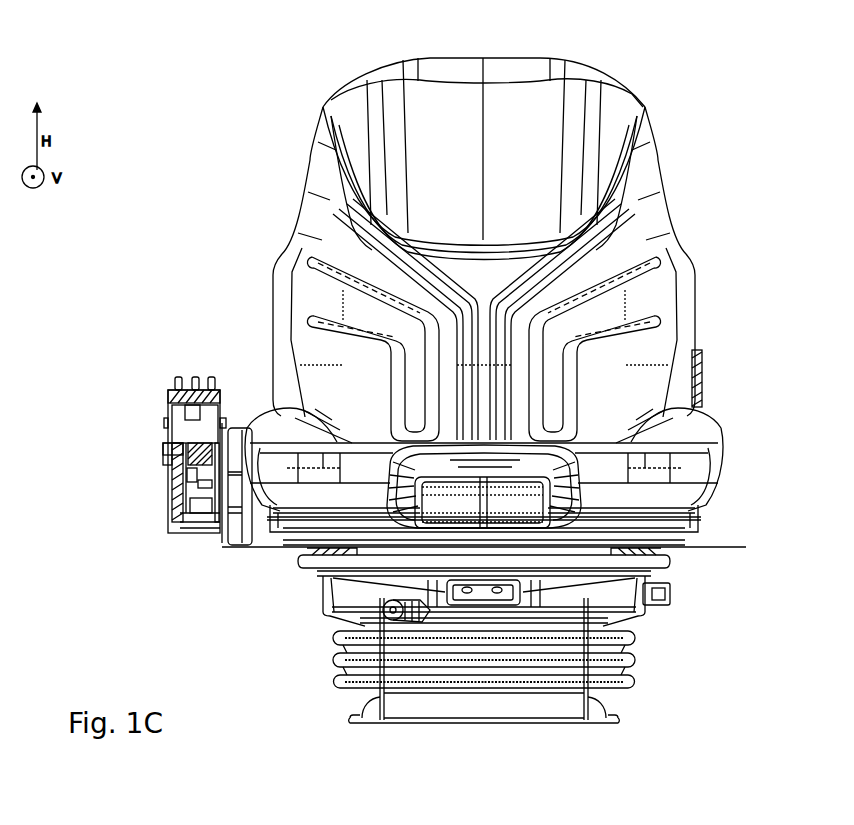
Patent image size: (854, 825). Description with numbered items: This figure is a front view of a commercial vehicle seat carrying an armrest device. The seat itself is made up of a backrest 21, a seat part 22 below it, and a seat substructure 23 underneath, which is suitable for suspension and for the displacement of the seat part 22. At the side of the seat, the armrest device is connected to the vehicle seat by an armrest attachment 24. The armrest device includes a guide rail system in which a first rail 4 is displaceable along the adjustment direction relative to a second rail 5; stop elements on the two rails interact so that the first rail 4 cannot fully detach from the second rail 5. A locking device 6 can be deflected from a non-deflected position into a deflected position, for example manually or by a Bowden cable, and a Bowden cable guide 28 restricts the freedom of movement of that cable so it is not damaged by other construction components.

The first rail 4 is at (173, 419).
The second rail 5 is at (172, 407).
The locking device 6 is at (188, 414).
The backrest 21 is at (690, 262).
The seat part 22 is at (692, 466).
The seat substructure 23 is at (633, 642).
The armrest attachment 24 is at (238, 428).
The Bowden cable guide 28 is at (168, 444).